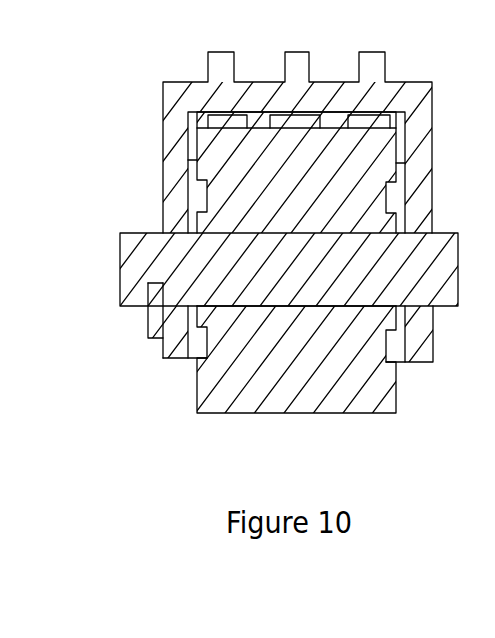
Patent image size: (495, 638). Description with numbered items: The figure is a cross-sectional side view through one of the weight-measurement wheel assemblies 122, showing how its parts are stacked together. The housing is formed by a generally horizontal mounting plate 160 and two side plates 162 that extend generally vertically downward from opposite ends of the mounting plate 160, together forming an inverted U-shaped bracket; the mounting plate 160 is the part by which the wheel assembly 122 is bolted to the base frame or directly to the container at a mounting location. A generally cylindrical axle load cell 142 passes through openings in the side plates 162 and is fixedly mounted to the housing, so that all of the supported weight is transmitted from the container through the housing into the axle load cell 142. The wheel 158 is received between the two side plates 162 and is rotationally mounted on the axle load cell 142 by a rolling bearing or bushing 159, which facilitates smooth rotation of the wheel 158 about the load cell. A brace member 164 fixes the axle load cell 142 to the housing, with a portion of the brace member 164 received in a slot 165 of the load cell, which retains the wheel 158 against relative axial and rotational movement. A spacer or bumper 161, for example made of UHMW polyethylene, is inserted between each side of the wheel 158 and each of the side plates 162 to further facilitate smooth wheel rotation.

The weight-measurement wheel assembly 122 is at (247, 319).
The axle load cell 142 is at (117, 273).
The wheel 158 is at (268, 416).
The rolling bearing or bushing 159 is at (372, 312).
The mounting plate 160 is at (400, 97).
The spacer or bumper 161 is at (401, 366).
The side plate 162 is at (157, 129).
The brace member 164 is at (146, 323).
The slot 165 is at (158, 282).